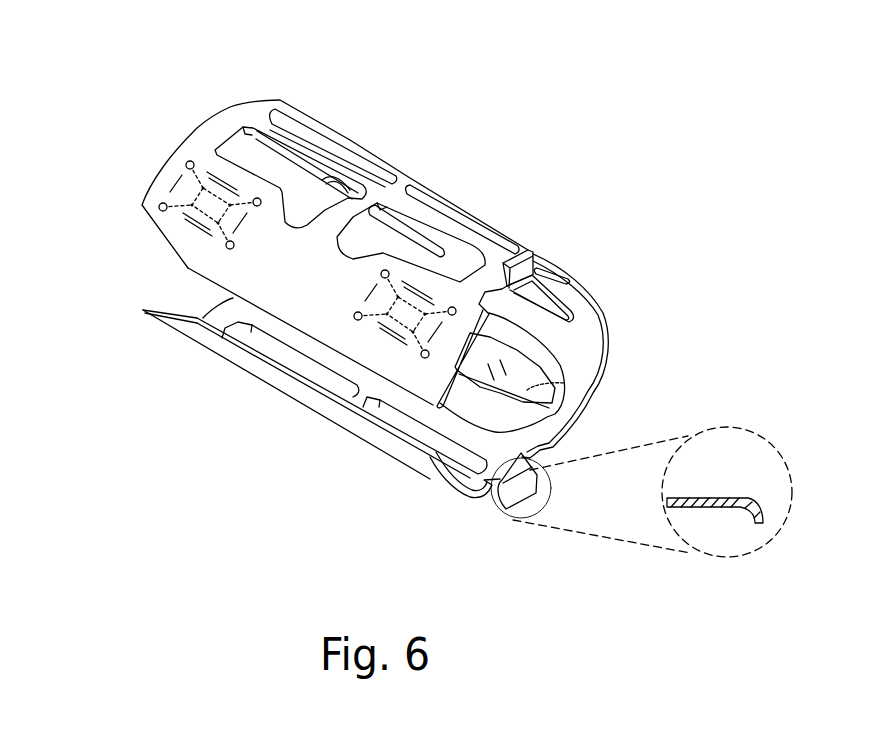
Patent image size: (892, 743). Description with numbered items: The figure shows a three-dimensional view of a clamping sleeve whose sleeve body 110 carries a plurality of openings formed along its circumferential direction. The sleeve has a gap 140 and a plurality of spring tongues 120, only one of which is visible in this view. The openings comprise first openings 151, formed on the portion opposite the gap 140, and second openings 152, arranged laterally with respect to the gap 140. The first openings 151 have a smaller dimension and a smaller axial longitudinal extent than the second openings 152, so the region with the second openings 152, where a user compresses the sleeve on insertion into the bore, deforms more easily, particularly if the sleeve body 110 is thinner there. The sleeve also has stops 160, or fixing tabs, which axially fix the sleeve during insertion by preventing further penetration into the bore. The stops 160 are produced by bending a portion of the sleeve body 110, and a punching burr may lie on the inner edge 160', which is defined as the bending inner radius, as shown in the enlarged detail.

The sleeve body 110 is at (380, 190).
The spring tongue 120 is at (562, 381).
The gap 140 is at (135, 288).
The first opening 151 is at (571, 318).
The second opening 152 is at (248, 158).
The stop 160 is at (665, 508).
The inner edge 160' is at (709, 548).